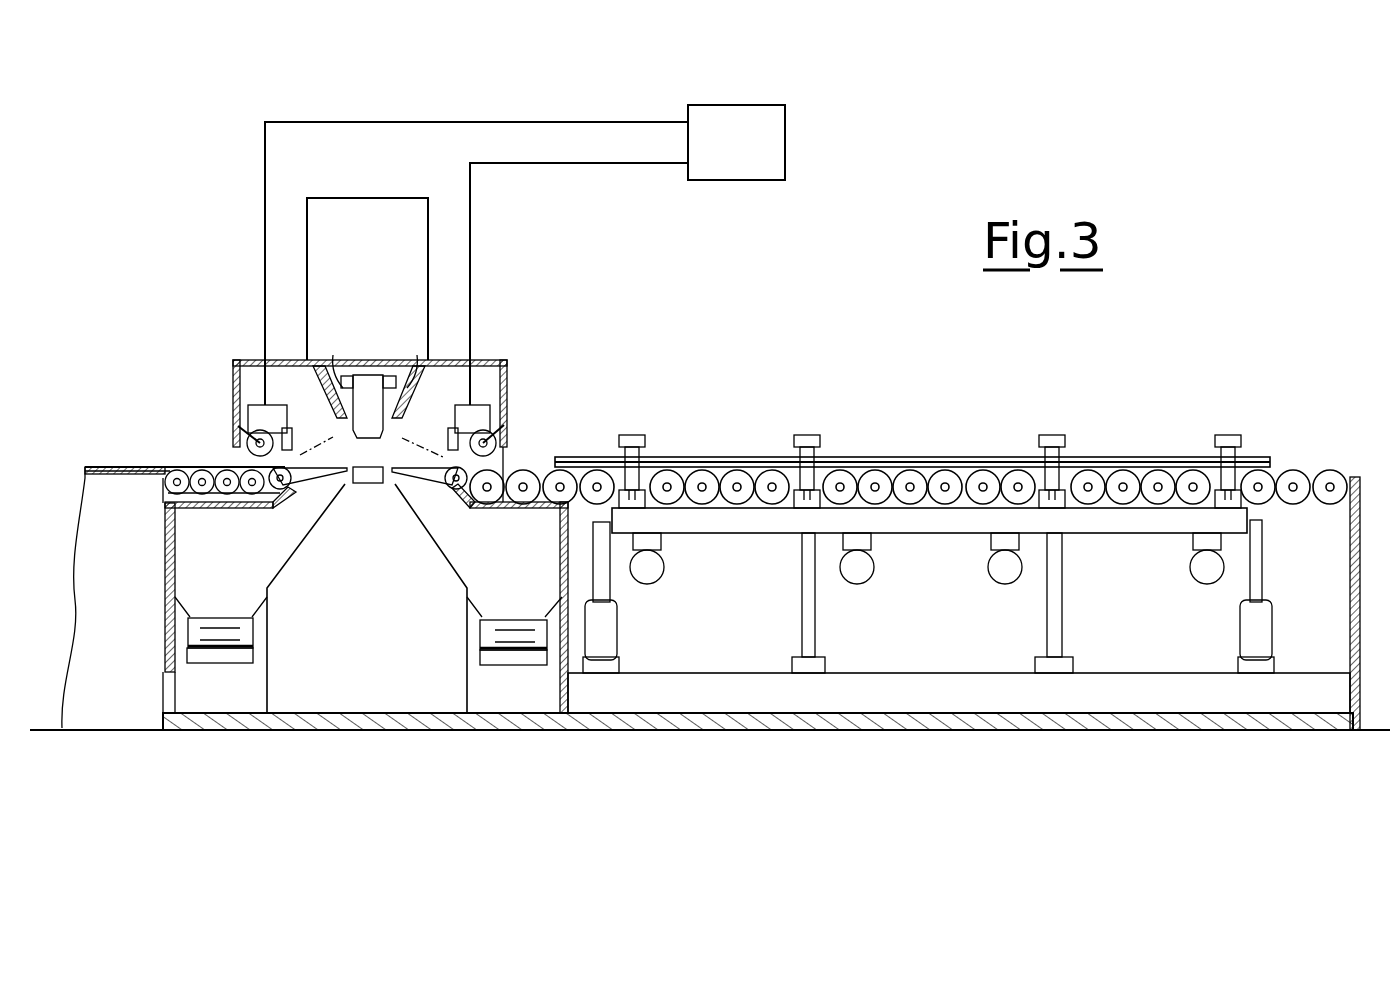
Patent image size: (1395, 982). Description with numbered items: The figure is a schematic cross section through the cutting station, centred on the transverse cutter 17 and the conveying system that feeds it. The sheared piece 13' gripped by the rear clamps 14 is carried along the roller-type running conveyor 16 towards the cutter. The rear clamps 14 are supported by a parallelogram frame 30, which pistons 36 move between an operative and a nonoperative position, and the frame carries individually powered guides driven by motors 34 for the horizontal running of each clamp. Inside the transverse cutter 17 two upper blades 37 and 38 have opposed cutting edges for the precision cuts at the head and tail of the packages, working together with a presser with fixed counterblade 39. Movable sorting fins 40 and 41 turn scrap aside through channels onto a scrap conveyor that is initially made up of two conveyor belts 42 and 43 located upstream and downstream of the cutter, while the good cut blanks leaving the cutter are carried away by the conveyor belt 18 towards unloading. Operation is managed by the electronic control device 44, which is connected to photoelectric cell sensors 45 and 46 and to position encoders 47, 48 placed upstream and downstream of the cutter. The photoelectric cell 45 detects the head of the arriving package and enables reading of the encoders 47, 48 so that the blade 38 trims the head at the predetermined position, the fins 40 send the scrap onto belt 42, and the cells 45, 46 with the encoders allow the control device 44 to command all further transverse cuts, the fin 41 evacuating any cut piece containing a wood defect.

The transverse cutter 17 is at (380, 183).
The control device 44 is at (750, 110).
The upper blade 37 is at (333, 368).
The upper blade 38 is at (414, 368).
The presser with fixed counterblade 39 is at (370, 484).
The sorting fin 40 is at (437, 490).
The sorting fin 41 is at (307, 480).
The photoelectric cell sensor 45 is at (443, 427).
The photoelectric cell sensor 46 is at (303, 420).
The position encoder 47 is at (503, 457).
The position encoder 48 is at (238, 452).
The conveyor belt 18 is at (168, 467).
The conveyor belt 42 is at (508, 628).
The conveyor belt 43 is at (213, 630).
The parallelogram frame 30 is at (945, 627).
The running conveyor 16 is at (1307, 458).
The sheared piece 13' is at (912, 411).
The rear clamp 14 is at (633, 437).
The motor 34 is at (660, 570).
The piston 36 is at (615, 630).